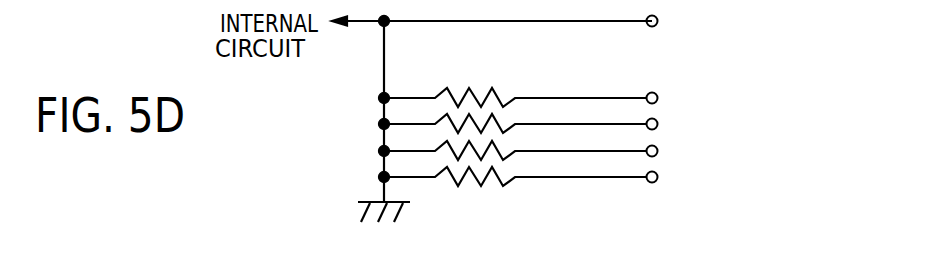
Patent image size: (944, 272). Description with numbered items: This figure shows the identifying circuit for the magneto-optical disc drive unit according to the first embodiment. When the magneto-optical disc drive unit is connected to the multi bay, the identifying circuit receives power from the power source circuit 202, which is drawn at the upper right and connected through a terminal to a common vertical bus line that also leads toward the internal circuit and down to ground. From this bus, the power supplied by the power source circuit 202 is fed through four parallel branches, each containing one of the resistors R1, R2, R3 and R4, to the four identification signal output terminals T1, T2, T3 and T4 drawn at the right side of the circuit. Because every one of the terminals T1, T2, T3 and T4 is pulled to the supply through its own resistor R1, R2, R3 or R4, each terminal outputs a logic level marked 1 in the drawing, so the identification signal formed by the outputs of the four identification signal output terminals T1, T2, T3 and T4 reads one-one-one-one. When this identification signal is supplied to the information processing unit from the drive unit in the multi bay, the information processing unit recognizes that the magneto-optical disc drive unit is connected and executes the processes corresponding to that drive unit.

The semiconductor device terminal 1 is at (696, 138).
The power source circuit 202 is at (878, 21).
The resistor R1 is at (515, 84).
The resistor R2 is at (515, 117).
The resistor R3 is at (515, 144).
The resistor R4 is at (515, 170).
The identification signal output terminal T1 is at (680, 98).
The identification signal output terminal T2 is at (680, 124).
The identification signal output terminal T3 is at (680, 151).
The identification signal output terminal T4 is at (680, 177).